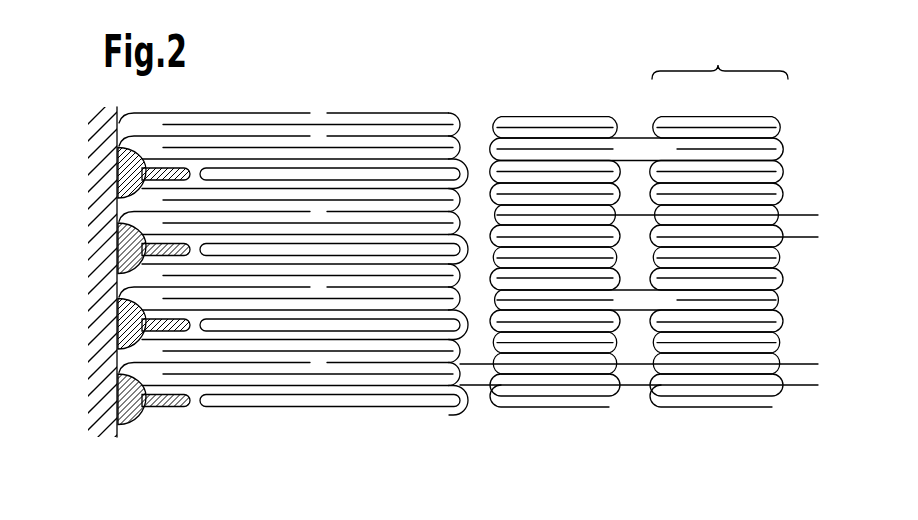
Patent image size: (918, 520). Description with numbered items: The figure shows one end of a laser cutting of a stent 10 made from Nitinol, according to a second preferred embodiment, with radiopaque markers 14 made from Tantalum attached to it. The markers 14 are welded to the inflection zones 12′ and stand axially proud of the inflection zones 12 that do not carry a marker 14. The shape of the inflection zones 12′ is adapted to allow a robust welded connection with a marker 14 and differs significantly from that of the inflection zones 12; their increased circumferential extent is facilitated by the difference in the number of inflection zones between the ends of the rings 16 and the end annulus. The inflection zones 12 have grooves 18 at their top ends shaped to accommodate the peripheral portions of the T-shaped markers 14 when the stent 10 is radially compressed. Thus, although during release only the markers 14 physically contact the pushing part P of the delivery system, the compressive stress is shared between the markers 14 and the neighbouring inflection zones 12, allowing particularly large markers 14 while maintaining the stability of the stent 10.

The stent 10 is at (508, 427).
The inflection zones 12 is at (119, 356).
The inflection zones 12′ is at (198, 172).
The radiopaque markers 14 is at (130, 423).
The rings 16 is at (720, 59).
The grooves 18 is at (122, 106).
The pushing part P is at (104, 285).